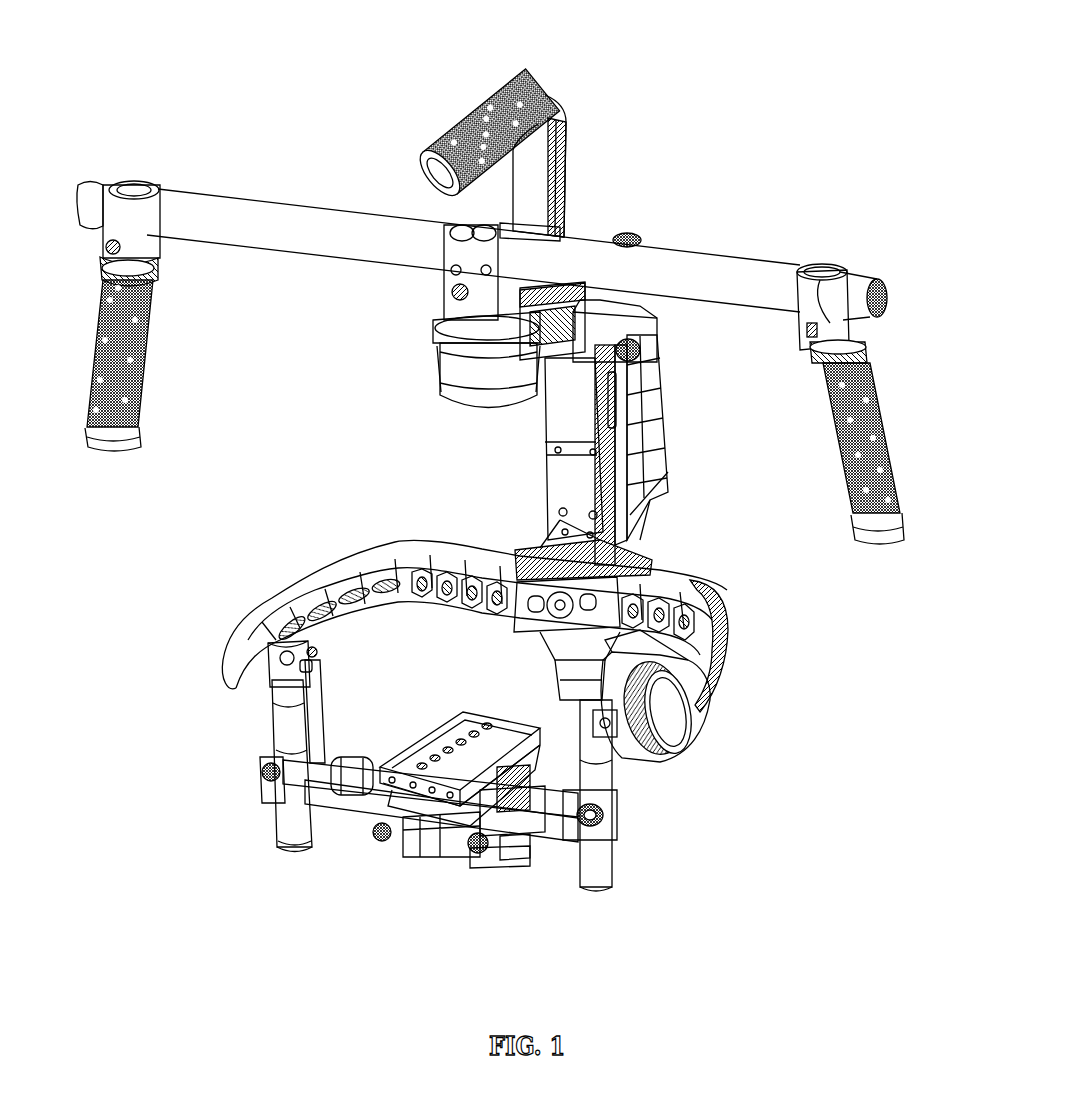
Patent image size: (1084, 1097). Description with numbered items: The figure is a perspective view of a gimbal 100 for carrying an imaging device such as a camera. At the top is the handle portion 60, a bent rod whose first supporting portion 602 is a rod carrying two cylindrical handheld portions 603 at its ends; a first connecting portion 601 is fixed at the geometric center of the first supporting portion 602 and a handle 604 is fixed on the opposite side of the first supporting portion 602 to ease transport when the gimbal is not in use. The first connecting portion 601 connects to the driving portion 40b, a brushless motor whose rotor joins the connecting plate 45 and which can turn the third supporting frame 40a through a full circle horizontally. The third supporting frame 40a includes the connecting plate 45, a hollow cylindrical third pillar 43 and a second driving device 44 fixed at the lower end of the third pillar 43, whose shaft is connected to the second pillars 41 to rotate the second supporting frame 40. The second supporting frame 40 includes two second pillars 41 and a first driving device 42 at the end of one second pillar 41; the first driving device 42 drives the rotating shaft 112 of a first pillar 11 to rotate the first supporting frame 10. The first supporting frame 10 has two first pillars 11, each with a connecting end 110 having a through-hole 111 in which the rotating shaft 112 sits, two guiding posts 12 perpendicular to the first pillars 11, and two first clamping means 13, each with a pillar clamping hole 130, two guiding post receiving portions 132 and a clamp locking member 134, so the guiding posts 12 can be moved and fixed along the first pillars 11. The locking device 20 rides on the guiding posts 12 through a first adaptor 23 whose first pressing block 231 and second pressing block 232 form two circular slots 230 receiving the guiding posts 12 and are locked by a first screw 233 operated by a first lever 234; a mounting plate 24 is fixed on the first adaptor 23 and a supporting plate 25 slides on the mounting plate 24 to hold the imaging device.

The gimbal 100 is at (431, 37).
The first supporting frame 10 is at (660, 858).
The first pillar 11 is at (296, 838).
The guiding post 12 is at (327, 787).
The first clamping means 13 is at (296, 742).
The connecting end 110 is at (282, 672).
The through-hole 111 is at (317, 653).
The rotating shaft 112 is at (310, 663).
The pillar clamping hole 130 is at (606, 785).
The guiding post receiving portion 132 is at (350, 753).
The clamp locking member 134 is at (604, 814).
The locking device 20 is at (493, 693).
The first adaptor 23 is at (550, 903).
The mounting plate 24 is at (522, 746).
The supporting plate 25 is at (507, 720).
The circular slot 230 is at (518, 832).
The first pressing block 231 is at (507, 855).
The second pressing block 232 is at (512, 858).
The first screw 233 is at (476, 836).
The first lever 234 is at (492, 850).
The second supporting frame 40 is at (760, 742).
The third supporting frame 40a is at (530, 460).
The driving portion 40b is at (500, 380).
The second pillar 41 is at (722, 582).
The first driving device 42 is at (636, 688).
The third pillar 43 is at (632, 432).
The second driving device 44 is at (640, 546).
The connecting plate 45 is at (642, 240).
The handle portion 60 is at (668, 146).
The first connecting portion 601 is at (470, 326).
The first supporting portion 602 is at (707, 277).
The handheld portion 603 is at (150, 338).
The handle 604 is at (550, 98).